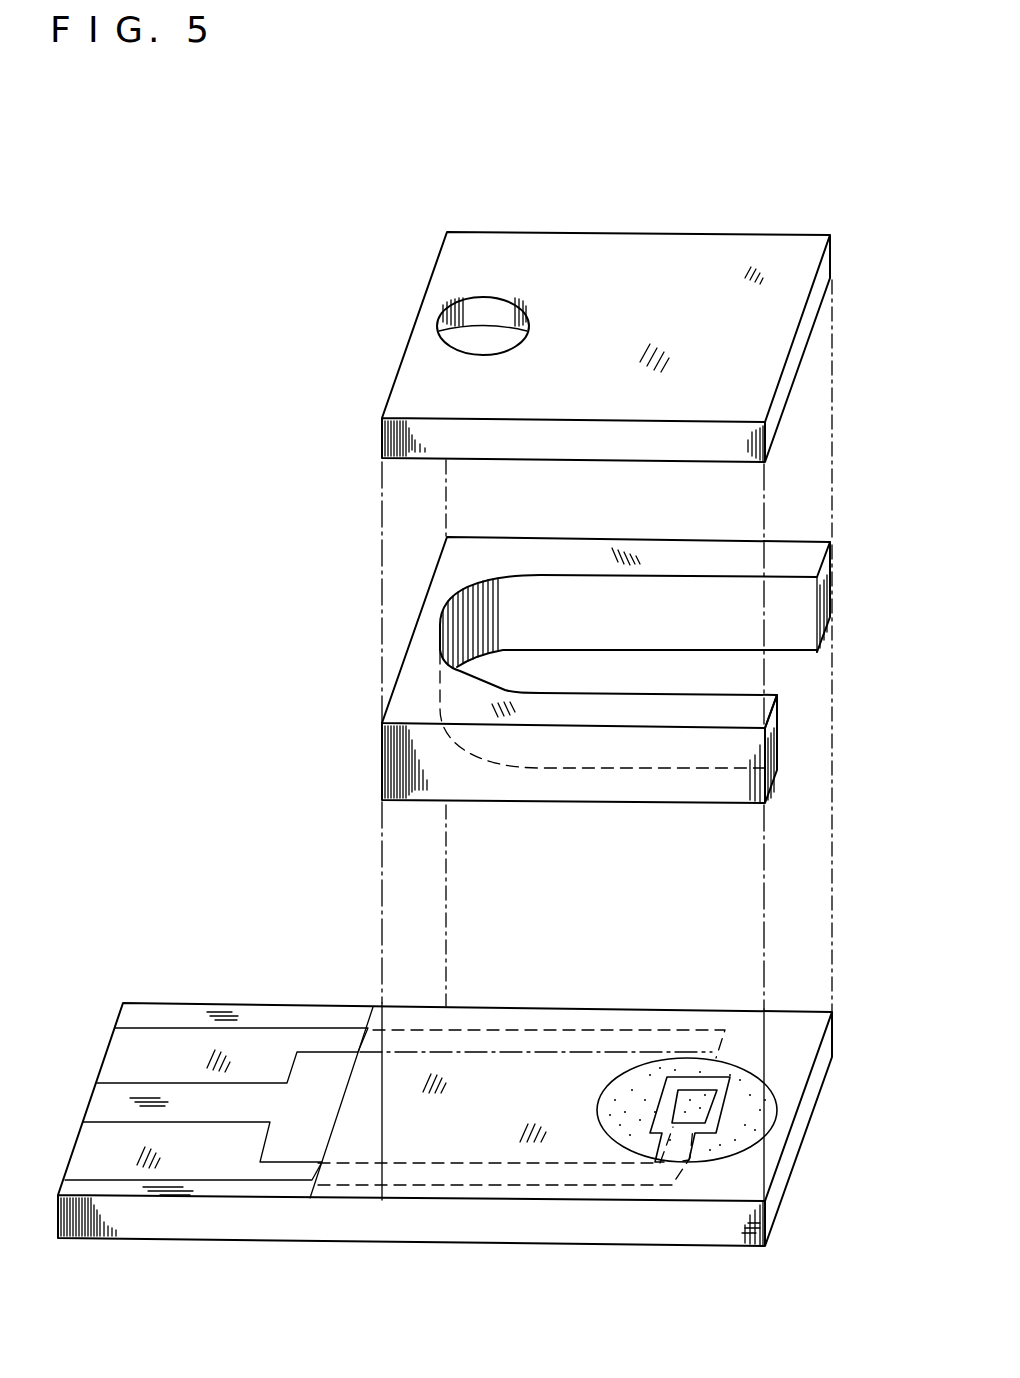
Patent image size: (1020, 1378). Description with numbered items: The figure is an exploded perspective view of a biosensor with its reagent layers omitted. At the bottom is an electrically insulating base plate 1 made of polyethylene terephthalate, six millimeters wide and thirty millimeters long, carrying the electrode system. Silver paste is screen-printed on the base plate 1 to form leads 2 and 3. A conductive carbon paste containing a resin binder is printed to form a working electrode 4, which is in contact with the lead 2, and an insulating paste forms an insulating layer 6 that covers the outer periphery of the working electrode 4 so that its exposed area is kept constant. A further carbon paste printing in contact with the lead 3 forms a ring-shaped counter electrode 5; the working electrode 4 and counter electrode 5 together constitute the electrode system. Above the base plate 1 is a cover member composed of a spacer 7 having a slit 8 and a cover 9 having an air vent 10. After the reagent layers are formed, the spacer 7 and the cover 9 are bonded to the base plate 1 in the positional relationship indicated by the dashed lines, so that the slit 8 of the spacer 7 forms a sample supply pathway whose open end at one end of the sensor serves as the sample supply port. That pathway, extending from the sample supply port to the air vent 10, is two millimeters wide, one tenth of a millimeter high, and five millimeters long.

The base plate 1 is at (718, 1223).
The lead 2 is at (168, 1163).
The lead 3 is at (170, 1053).
The working electrode 4 is at (692, 1112).
The counter electrode 5 is at (630, 1128).
The insulating layer 6 is at (427, 1140).
The spacer 7 is at (437, 758).
The slit 8 is at (487, 627).
The cover 9 is at (427, 377).
The air vent 10 is at (482, 323).